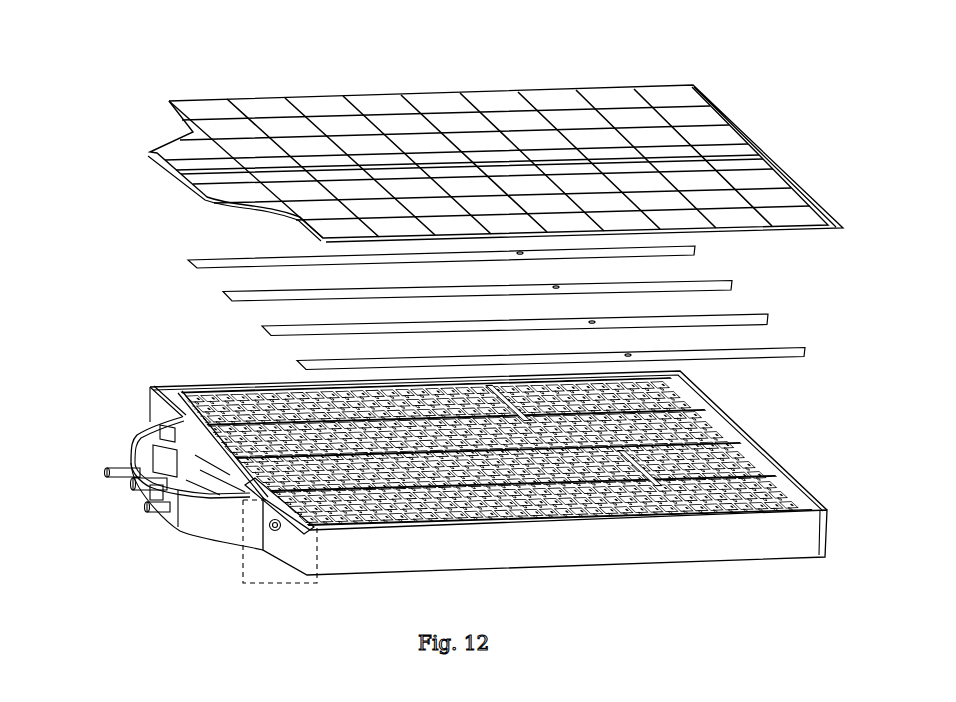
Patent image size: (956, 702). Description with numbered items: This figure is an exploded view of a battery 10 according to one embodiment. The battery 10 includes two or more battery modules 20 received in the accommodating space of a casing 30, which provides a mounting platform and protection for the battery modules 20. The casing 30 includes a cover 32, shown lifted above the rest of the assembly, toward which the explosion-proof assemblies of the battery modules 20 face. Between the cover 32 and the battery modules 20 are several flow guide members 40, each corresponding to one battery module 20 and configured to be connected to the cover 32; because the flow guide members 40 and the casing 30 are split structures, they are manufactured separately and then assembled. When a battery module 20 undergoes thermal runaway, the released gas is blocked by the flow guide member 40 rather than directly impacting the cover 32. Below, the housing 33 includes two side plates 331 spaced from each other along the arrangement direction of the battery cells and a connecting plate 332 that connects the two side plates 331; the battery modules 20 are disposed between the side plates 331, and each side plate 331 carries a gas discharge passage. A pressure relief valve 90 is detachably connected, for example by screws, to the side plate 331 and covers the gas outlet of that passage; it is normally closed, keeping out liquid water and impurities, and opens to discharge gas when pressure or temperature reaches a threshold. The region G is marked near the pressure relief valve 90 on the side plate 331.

The battery 10 is at (482, 46).
The casing 30 is at (42, 228).
The cover 32 is at (195, 147).
The housing 33 is at (70, 327).
The side plate 331 is at (153, 410).
The connecting plate 332 is at (215, 387).
The flow guide member 40 is at (188, 260).
The battery module 20 is at (675, 380).
The pressure relief valve 90 is at (263, 525).
The gap G is at (243, 520).